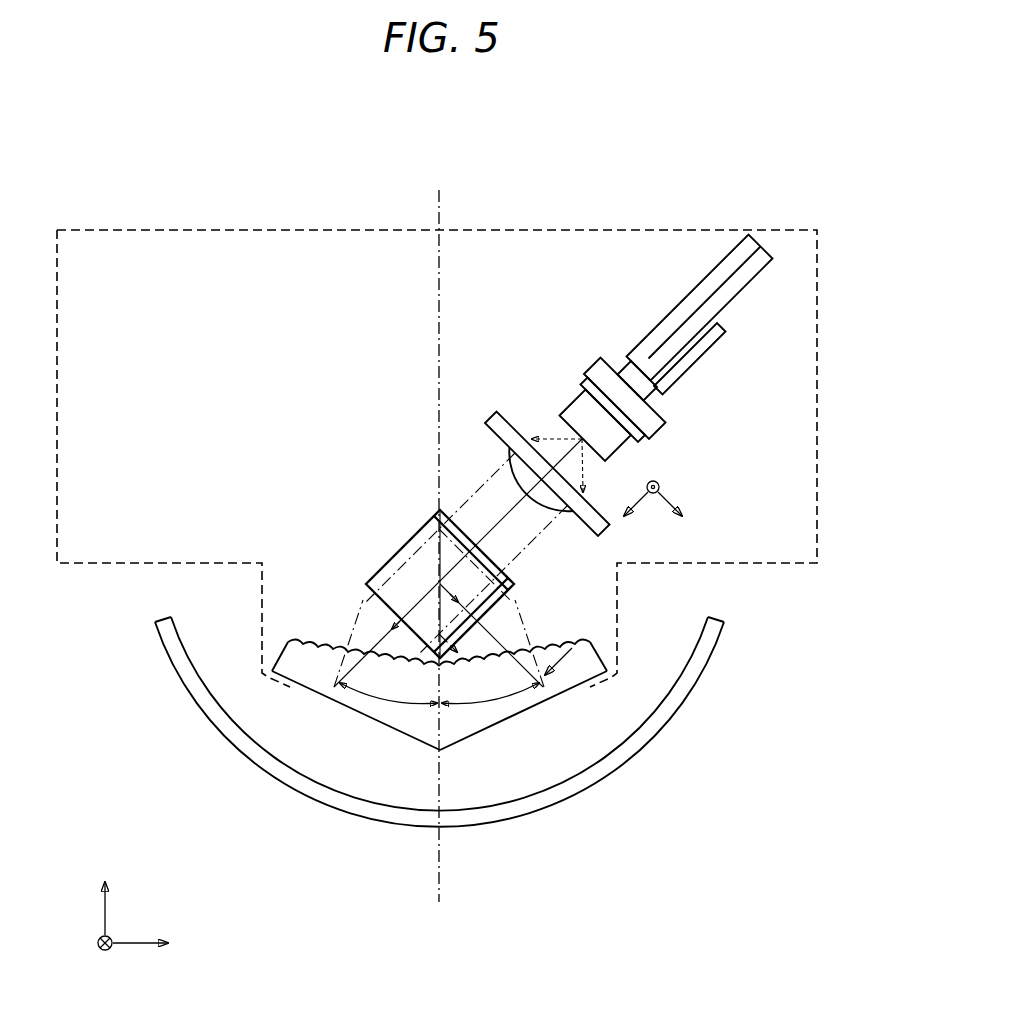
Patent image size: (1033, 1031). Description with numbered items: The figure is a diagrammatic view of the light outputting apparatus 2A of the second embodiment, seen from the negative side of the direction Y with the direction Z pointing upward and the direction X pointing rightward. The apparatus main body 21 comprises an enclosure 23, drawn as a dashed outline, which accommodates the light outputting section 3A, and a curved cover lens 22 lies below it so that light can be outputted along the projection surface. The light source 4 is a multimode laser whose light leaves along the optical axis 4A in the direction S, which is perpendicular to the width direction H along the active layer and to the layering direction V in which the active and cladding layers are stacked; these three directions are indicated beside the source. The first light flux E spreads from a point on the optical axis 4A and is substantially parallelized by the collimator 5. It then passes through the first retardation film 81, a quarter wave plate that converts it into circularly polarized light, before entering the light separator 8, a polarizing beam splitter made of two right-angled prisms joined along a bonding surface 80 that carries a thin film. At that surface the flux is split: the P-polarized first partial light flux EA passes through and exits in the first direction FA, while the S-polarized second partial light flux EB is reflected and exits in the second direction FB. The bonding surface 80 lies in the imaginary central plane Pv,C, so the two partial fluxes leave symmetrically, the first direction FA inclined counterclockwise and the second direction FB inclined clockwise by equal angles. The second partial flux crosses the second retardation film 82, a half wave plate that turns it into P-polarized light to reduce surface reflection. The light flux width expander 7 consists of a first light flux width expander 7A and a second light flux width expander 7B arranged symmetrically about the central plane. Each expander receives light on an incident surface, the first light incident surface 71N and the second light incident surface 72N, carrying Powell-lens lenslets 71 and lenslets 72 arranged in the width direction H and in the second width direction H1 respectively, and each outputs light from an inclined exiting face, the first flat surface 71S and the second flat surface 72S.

The light outputting apparatus 2A is at (750, 180).
The apparatus main body 21 is at (765, 572).
The enclosure 23 is at (795, 228).
The light outputting section 3A is at (353, 468).
The light source 4 is at (558, 414).
The optical axis 4A is at (498, 461).
The collimator 5 is at (495, 412).
The first light flux E is at (484, 418).
The light flux width expander 7 is at (600, 645).
The first light flux width expander 7A is at (356, 668).
The second light flux width expander 7B is at (523, 698).
The lenslets 71 is at (391, 655).
The lenslets 72 is at (490, 655).
The first flat surface 71S is at (343, 706).
The second flat surface 72S is at (536, 706).
The first light incident surface 71N is at (343, 626).
The second light incident surface 72N is at (541, 645).
The light separator 8 is at (408, 538).
The bonding surface 80 is at (442, 556).
The first retardation film 81 is at (452, 522).
The second retardation film 82 is at (512, 598).
The first direction FA is at (410, 600).
The second direction FB is at (458, 593).
The first partial light flux EA is at (365, 596).
The second partial light flux EB is at (536, 608).
The second width direction H1 is at (572, 664).
The layering direction V is at (663, 477).
The direction S is at (636, 518).
The width direction H is at (678, 518).
The cover lens 22 is at (700, 665).
The imaginary central plane Pv,C is at (440, 853).
The direction Z is at (131, 895).
The direction X is at (179, 946).
The direction Y is at (97, 959).